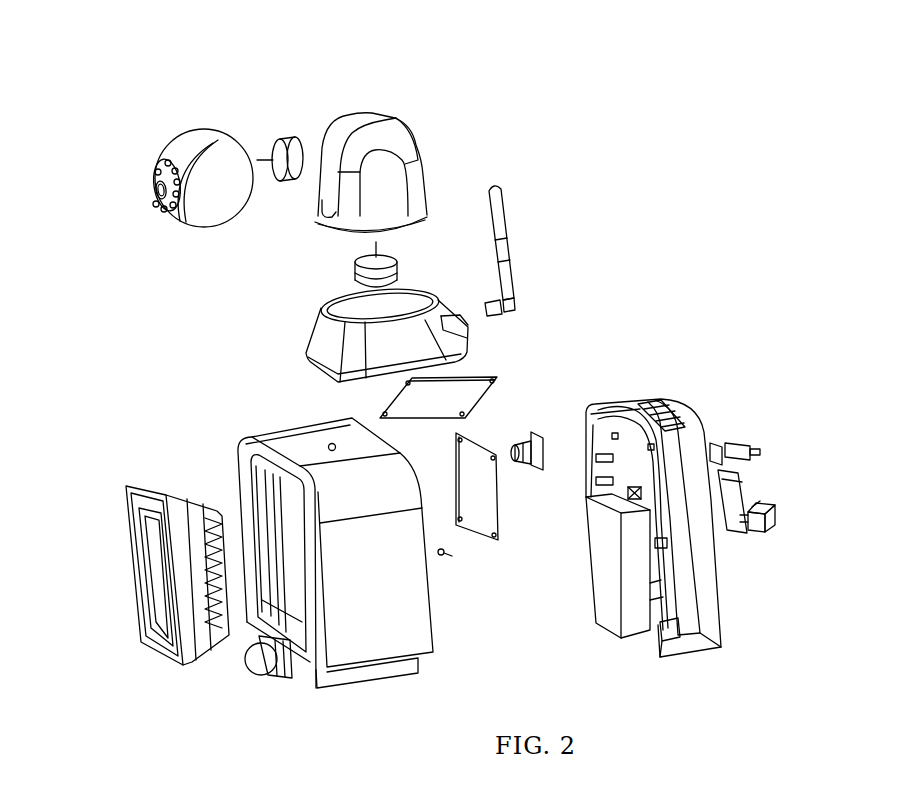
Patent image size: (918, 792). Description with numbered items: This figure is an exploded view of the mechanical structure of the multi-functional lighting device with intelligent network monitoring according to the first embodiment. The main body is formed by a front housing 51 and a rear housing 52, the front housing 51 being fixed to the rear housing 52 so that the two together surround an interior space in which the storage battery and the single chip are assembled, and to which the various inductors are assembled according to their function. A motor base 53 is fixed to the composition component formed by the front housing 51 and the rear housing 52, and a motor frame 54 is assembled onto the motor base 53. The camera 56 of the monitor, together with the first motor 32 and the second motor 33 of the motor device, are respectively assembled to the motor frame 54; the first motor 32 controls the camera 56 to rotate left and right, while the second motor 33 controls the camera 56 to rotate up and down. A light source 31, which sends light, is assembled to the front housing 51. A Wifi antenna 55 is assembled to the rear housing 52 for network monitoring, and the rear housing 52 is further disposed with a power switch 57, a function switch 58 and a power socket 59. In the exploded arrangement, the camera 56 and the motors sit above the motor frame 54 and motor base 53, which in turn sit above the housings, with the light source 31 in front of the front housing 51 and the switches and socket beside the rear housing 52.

The light source 31 is at (152, 567).
The first motor 32 is at (382, 272).
The second motor 33 is at (287, 148).
The front housing 51 is at (293, 448).
The rear housing 52 is at (698, 568).
The motor base 53 is at (375, 345).
The motor frame 54 is at (392, 143).
The Wifi antenna 55 is at (500, 227).
The camera 56 is at (190, 166).
The power switch 57 is at (763, 513).
The function switch 58 is at (733, 448).
The power socket 59 is at (532, 437).